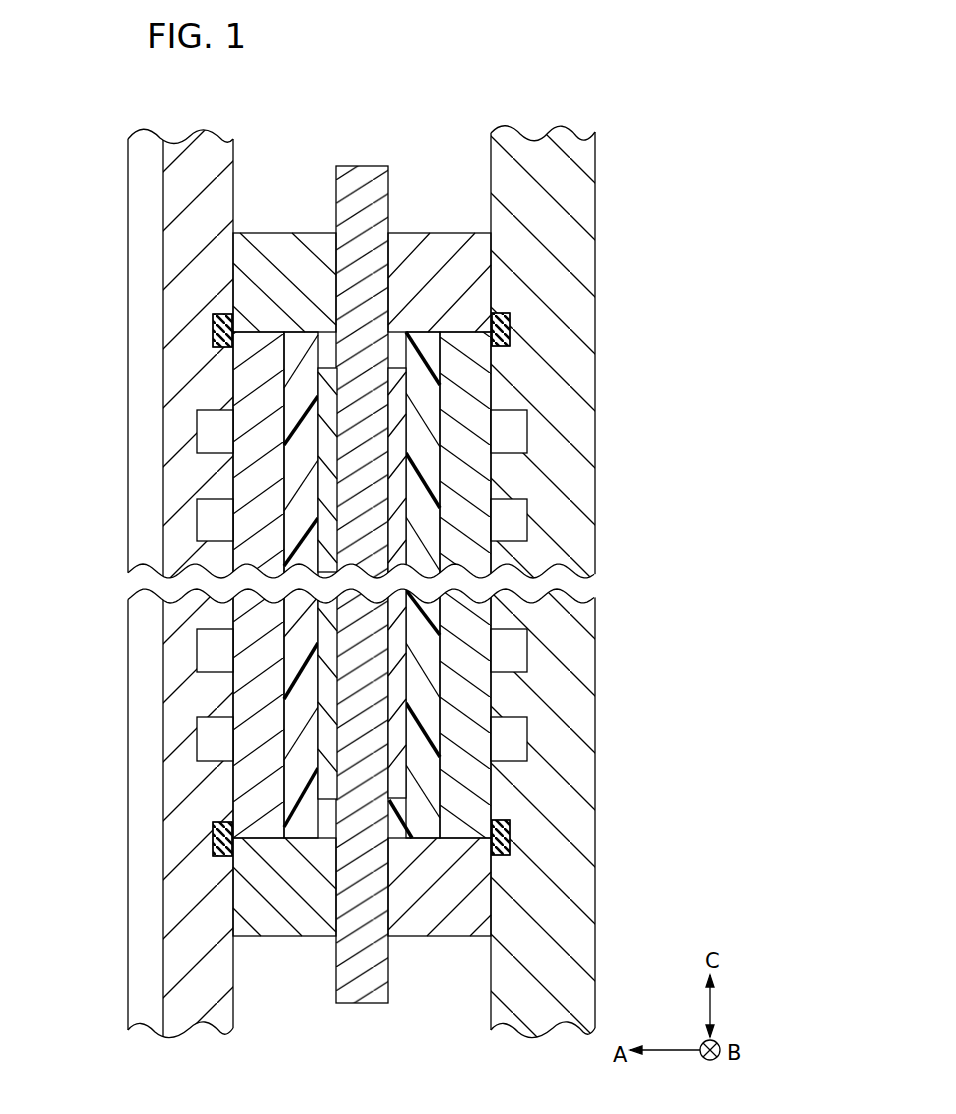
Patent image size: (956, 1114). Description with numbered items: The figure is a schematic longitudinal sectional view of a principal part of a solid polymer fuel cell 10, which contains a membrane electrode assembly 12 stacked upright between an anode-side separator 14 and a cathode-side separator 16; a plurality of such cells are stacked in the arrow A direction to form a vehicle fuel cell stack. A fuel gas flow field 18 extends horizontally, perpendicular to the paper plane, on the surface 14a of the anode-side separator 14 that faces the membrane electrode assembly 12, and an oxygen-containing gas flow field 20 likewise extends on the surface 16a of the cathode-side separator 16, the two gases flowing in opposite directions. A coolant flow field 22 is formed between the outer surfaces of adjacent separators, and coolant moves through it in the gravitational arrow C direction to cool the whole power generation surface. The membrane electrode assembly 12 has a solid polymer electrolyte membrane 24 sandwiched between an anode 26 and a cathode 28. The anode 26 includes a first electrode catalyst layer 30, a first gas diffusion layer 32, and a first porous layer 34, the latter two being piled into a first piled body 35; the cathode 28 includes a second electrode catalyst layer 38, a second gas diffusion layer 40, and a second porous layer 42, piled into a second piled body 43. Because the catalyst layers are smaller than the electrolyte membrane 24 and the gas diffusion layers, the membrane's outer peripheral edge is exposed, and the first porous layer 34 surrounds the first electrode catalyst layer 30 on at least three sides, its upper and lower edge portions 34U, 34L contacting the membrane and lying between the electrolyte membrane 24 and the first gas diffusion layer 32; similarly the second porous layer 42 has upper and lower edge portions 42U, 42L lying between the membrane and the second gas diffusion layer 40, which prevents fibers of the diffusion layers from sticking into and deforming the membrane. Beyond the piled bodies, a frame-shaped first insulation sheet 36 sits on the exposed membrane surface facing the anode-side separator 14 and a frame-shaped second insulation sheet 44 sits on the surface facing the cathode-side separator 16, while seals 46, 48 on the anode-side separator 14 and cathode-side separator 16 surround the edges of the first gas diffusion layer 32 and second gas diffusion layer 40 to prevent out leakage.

The solid polymer fuel cell 10 is at (605, 55).
The membrane electrode assembly 12 is at (367, 125).
The anode-side separator 14 is at (553, 573).
The surface of the anode-side separator 14a is at (490, 147).
The cathode-side separator 16 is at (183, 579).
The surface of the cathode-side separator 16a is at (233, 152).
The fuel gas flow field 18 is at (505, 413).
The oxygen-containing gas flow field 20 is at (200, 430).
The coolant flow field 22 is at (128, 227).
The solid polymer electrolyte membrane 24 is at (348, 182).
The anode 26 is at (450, 192).
The cathode 28 is at (280, 192).
The first electrode catalyst layer 30 is at (397, 469).
The first gas diffusion layer 32 is at (475, 655).
The first porous layer 34 is at (519, 619).
The upper edge portion of the first porous inner layer 34U is at (404, 330).
The lower edge portion of the first porous inner layer 34L is at (412, 840).
The first piled body 35 is at (648, 630).
The first insulation sheet 36 is at (463, 297).
The second electrode catalyst layer 38 is at (327, 458).
The second gas diffusion layer 40 is at (250, 657).
The second porous layer 42 is at (205, 619).
The upper edge portion of the second porous inner layer 42U is at (307, 330).
The lower edge portion of the second porous inner layer 42L is at (310, 840).
The second piled body 43 is at (73, 635).
The second insulation sheet 44 is at (262, 267).
The seal 46 is at (512, 837).
The seal 48 is at (213, 845).